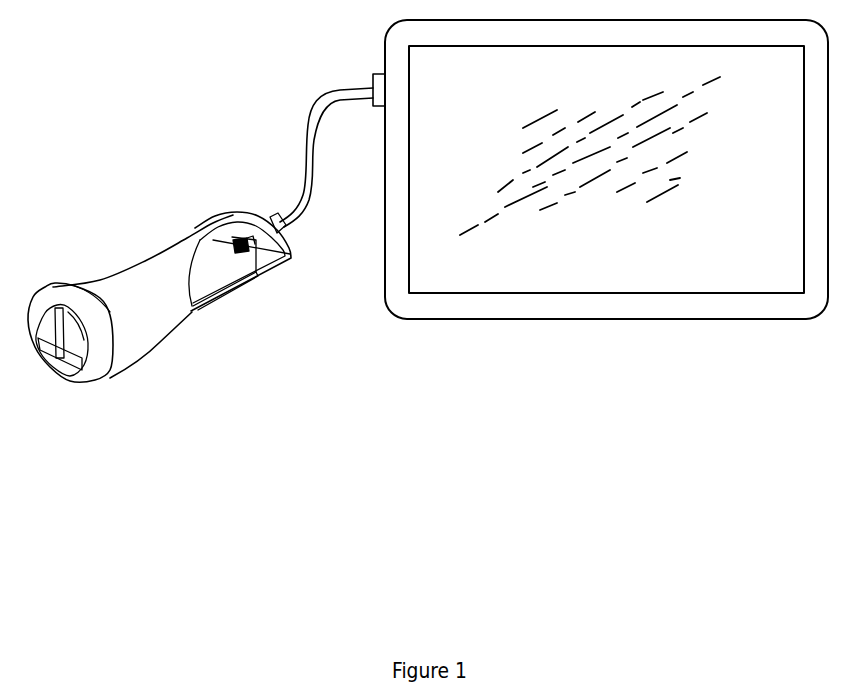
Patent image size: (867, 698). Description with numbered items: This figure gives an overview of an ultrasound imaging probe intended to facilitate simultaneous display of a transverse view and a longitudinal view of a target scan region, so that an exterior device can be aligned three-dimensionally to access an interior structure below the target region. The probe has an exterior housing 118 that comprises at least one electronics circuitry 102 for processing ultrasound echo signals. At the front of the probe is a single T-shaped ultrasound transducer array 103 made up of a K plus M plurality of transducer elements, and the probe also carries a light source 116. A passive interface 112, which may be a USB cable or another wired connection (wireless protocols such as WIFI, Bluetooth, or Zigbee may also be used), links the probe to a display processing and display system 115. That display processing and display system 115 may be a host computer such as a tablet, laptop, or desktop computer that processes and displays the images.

The electronics circuitry 102 is at (255, 277).
The T-shaped ultrasound transducer array 103 is at (88, 366).
The passive interface 112 is at (305, 137).
The display processing and display system 115 is at (437, 320).
The light source 116 is at (58, 373).
The exterior housing 118 is at (190, 232).